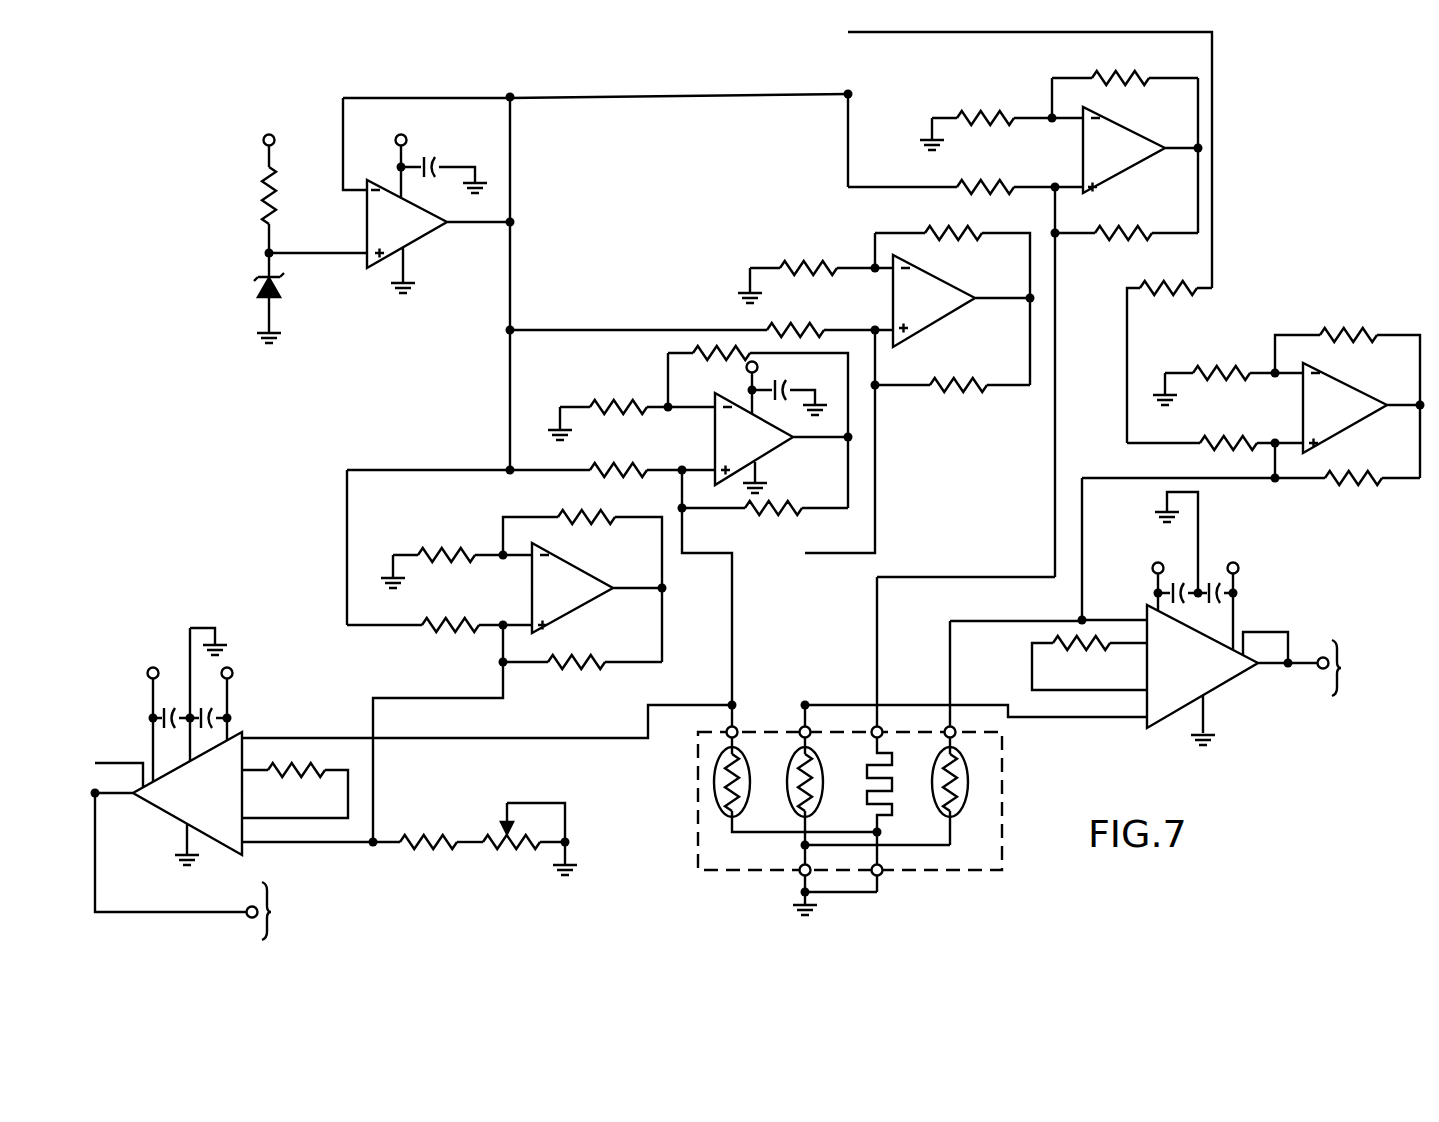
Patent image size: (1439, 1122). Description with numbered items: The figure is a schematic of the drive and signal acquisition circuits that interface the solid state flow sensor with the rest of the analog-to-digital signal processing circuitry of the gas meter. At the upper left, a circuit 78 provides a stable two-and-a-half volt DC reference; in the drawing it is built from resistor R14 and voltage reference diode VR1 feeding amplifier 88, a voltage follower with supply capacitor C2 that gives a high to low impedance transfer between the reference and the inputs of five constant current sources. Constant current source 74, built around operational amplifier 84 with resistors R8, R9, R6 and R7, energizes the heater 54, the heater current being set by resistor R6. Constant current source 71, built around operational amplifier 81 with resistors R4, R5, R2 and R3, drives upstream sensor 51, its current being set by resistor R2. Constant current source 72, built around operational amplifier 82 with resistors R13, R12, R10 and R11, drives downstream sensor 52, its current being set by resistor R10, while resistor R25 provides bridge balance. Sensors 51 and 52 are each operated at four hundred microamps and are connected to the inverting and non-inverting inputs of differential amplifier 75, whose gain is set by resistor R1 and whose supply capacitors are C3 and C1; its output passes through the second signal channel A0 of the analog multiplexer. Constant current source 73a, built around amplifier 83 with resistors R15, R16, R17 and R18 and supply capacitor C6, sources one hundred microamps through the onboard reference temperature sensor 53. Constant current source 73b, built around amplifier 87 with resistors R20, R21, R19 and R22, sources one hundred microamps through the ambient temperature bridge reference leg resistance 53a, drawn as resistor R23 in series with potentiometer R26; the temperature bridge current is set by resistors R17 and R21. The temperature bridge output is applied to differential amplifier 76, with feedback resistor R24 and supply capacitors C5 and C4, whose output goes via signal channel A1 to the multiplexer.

The reference voltage circuit 78 is at (420, 89).
The voltage follower amplifier 88 is at (418, 240).
The resistor R14 is at (261, 207).
The voltage reference diode VR1 is at (257, 296).
The capacitor C2 is at (435, 157).
The constant current source 74 is at (1170, 197).
The operational amplifier 84 is at (1132, 131).
The resistor R8 is at (1120, 74).
The resistor R9 is at (983, 113).
The resistor R6 is at (987, 183).
The resistor R7 is at (1129, 228).
The bridge balance resistor R25 is at (1164, 285).
The constant current source 71 is at (990, 347).
The operational amplifier 81 is at (939, 283).
The resistor R4 is at (938, 230).
The resistor R5 is at (805, 267).
The resistor R2 is at (806, 328).
The resistor R3 is at (945, 384).
The constant current source 73a is at (700, 445).
The operational amplifier 83 is at (785, 447).
The resistor R15 is at (678, 355).
The resistor R16 is at (621, 405).
The capacitor C6 is at (788, 389).
The resistor R17 is at (627, 468).
The resistor R18 is at (776, 501).
The constant current source 73b is at (645, 558).
The operational amplifier 87 is at (602, 598).
The resistor R20 is at (450, 555).
The resistor R21 is at (450, 625).
The resistor R19 is at (583, 515).
The resistor R22 is at (576, 659).
The constant current source 72 is at (1290, 418).
The operational amplifier 82 is at (1348, 384).
The resistor R13 is at (1217, 365).
The resistor R12 is at (1345, 331).
The resistor R10 is at (1225, 440).
The resistor R11 is at (1340, 474).
The differential amplifier 75 is at (1231, 689).
The gain resistor R1 is at (1077, 658).
The capacitor C3 is at (1188, 567).
The capacitor C1 is at (1210, 569).
The second signal channel A0 is at (1346, 663).
The differential amplifier 76 is at (157, 808).
The resistor R24 is at (306, 779).
The capacitor C5 is at (182, 708).
The capacitor C4 is at (220, 708).
The signal channel A1 is at (264, 907).
The bridge reference leg resistance 53a is at (550, 882).
The resistor R23 is at (424, 815).
The potentiometer R26 is at (512, 850).
The reference temperature sensor 53 is at (746, 778).
The upstream sensor 51 is at (819, 778).
The heater 54 is at (892, 778).
The downstream sensor 52 is at (969, 778).